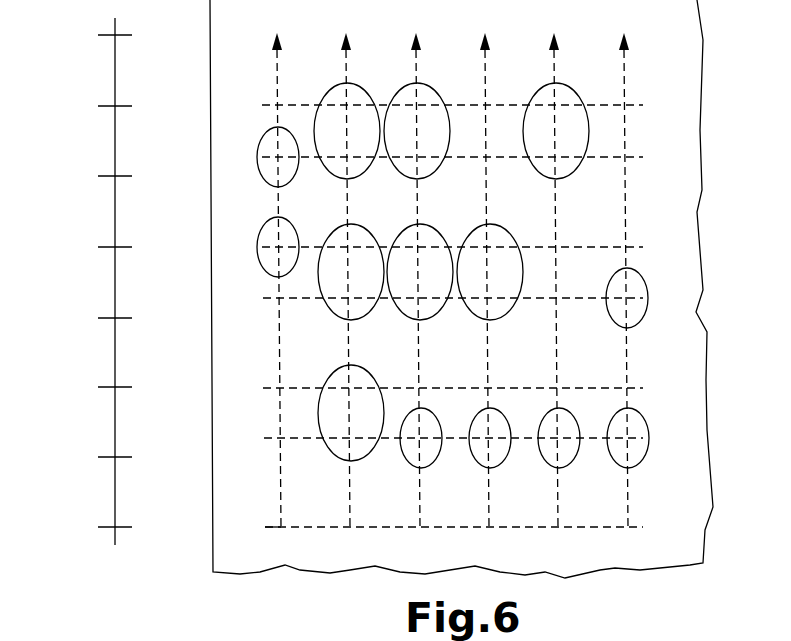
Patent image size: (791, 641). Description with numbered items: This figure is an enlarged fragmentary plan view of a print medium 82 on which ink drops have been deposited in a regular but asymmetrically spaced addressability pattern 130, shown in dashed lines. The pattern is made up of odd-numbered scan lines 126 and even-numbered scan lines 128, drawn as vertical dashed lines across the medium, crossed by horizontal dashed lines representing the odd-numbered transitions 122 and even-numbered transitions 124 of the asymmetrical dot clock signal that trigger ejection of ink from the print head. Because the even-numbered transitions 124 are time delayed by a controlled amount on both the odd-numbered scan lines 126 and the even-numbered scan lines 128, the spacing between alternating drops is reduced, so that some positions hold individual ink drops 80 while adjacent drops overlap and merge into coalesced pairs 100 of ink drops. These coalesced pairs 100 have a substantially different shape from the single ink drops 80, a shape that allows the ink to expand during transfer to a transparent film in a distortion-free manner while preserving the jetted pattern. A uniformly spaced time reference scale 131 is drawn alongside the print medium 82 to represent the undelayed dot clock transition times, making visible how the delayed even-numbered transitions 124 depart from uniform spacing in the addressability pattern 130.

The ink drops 80 is at (270, 170).
The print medium 82 is at (688, 508).
The coalesced pairs of ink drops 100 is at (360, 165).
The odd-numbered transitions 122 is at (268, 104).
The even-numbered transitions 124 is at (272, 300).
The odd-numbered scan lines 126 is at (275, 70).
The even-numbered scan lines 128 is at (344, 70).
The asymmetrically spaced addressability pattern 130 is at (256, 538).
The uniformly spaced time reference scale 131 is at (115, 212).